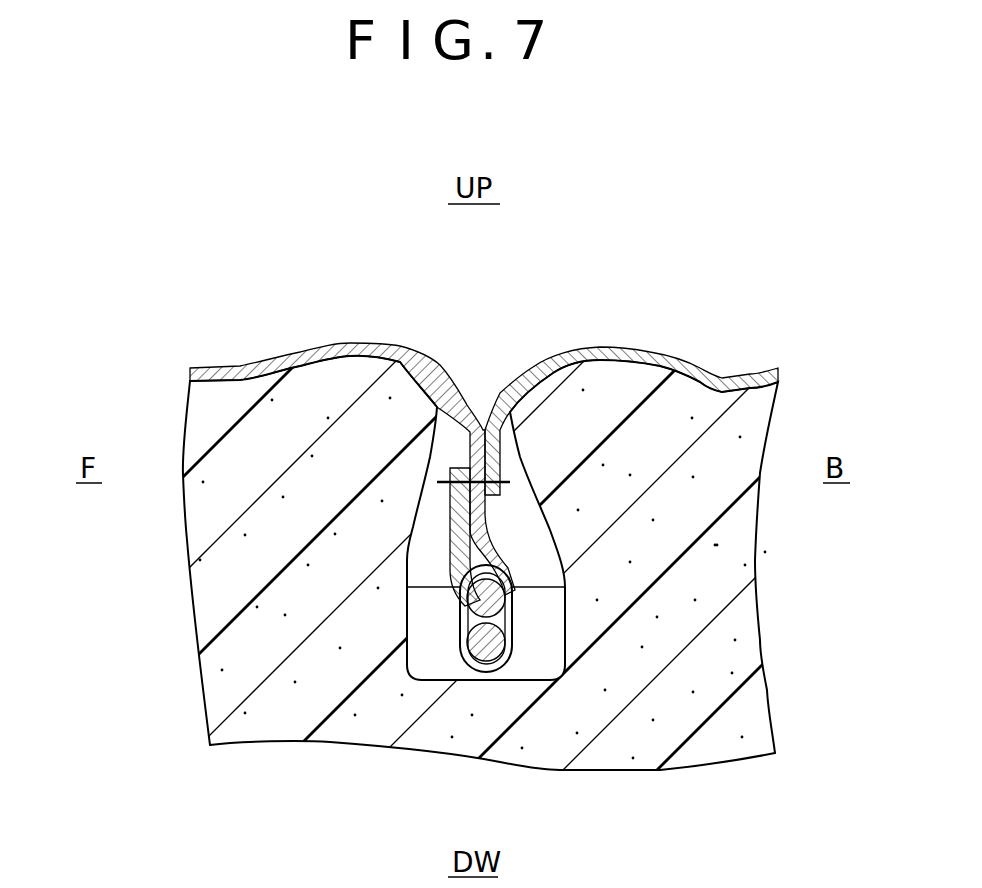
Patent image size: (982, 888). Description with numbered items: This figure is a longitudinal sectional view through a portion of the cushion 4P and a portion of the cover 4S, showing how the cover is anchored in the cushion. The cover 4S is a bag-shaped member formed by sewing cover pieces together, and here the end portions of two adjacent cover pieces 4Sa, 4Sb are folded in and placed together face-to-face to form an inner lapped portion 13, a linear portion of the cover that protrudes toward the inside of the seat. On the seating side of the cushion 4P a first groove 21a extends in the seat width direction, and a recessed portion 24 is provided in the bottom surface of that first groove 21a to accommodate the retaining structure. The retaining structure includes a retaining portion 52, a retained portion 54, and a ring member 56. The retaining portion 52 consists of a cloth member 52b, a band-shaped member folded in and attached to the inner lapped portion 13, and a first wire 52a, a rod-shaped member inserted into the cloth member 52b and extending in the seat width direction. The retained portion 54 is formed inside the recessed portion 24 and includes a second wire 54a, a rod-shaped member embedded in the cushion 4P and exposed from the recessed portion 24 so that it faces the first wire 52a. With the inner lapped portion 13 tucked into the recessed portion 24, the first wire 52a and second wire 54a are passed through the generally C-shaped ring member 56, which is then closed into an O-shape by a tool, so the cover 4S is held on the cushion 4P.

The cushion 4P is at (728, 532).
The cover 4S is at (484, 399).
The cover piece 4Sa is at (343, 356).
The cover piece 4Sb is at (528, 380).
The inner lapped portion 13 is at (500, 494).
The retaining portion 52 is at (280, 582).
The first wire 52a is at (484, 598).
The cloth member 52b is at (456, 545).
The ring member 56 is at (480, 652).
The retained portion 54 is at (278, 659).
The second wire 54a is at (482, 652).
The first groove 21a is at (523, 553).
The recessed portion 24 is at (533, 648).